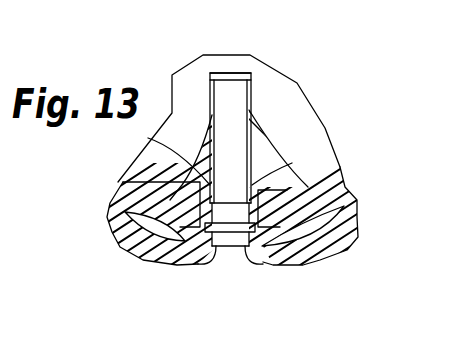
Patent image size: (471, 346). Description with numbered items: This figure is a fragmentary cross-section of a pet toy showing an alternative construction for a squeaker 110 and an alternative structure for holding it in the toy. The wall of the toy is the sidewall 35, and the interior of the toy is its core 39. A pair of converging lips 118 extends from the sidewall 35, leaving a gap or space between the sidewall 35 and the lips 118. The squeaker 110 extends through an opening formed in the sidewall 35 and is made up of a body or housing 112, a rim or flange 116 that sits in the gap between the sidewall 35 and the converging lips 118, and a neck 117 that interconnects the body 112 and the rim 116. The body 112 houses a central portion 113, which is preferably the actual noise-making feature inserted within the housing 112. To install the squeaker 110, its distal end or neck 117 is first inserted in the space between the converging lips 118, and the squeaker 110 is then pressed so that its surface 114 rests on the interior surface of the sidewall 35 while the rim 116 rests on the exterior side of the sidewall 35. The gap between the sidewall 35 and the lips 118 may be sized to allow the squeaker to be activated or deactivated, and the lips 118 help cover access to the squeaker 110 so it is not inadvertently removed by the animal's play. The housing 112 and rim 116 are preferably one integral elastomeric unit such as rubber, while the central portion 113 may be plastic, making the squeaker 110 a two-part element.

The core 39 is at (300, 128).
The sidewall 35 is at (127, 200).
The noise-making instrument/squeaker 110 is at (312, 143).
The body or housing 112 is at (148, 138).
The central portion 113 is at (225, 150).
The surface 114 is at (207, 180).
The rim or flange 116 is at (176, 248).
The neck 117 is at (233, 73).
The converging lips or extensions 118 is at (210, 258).